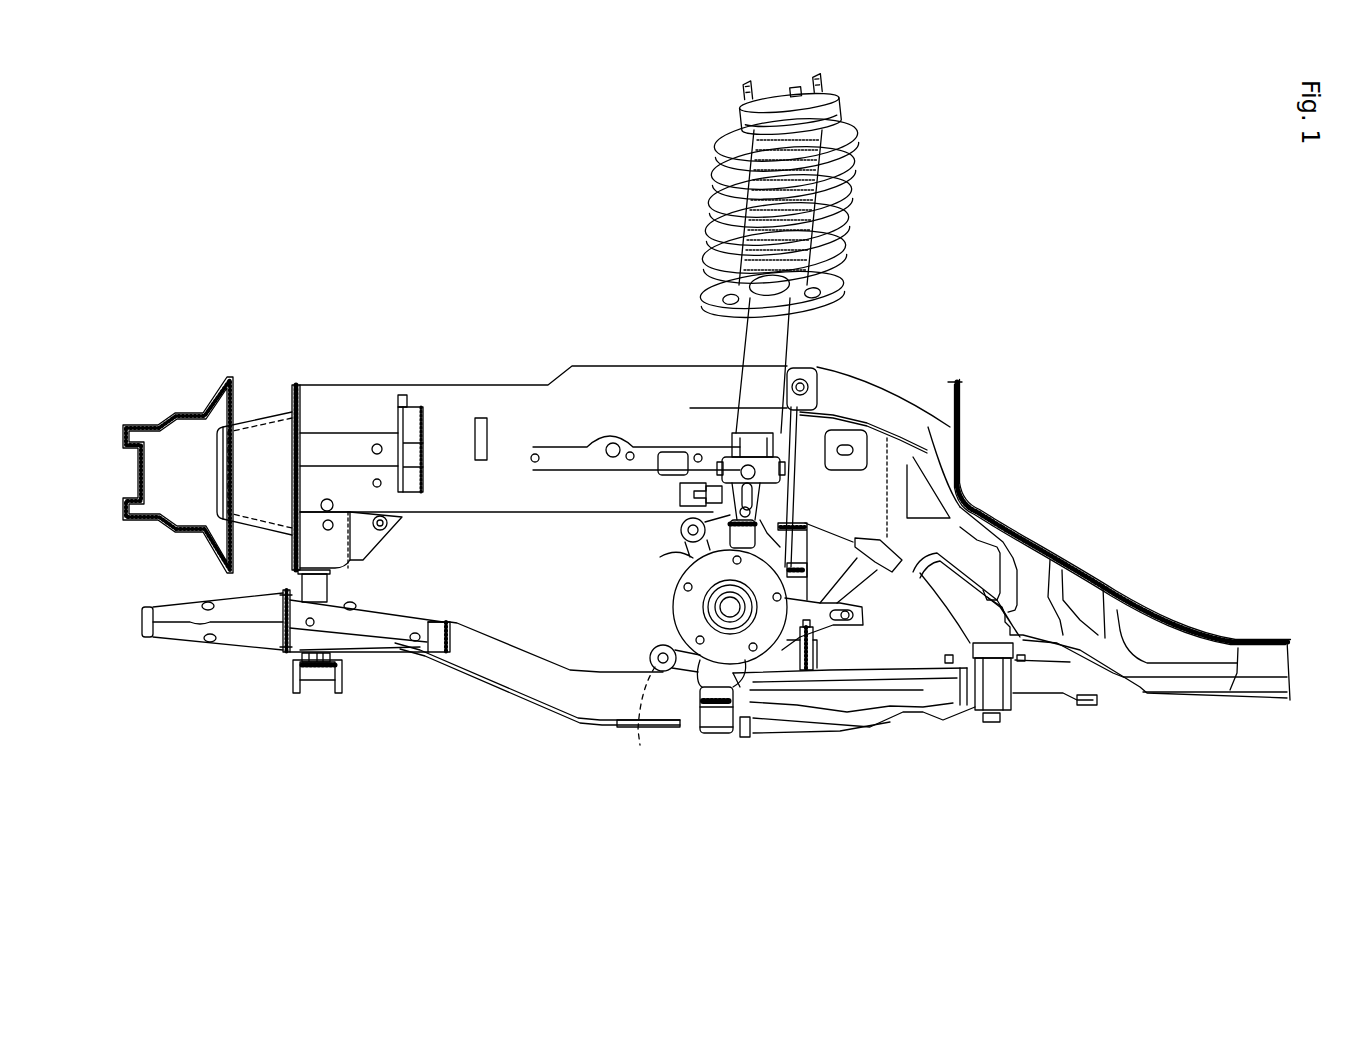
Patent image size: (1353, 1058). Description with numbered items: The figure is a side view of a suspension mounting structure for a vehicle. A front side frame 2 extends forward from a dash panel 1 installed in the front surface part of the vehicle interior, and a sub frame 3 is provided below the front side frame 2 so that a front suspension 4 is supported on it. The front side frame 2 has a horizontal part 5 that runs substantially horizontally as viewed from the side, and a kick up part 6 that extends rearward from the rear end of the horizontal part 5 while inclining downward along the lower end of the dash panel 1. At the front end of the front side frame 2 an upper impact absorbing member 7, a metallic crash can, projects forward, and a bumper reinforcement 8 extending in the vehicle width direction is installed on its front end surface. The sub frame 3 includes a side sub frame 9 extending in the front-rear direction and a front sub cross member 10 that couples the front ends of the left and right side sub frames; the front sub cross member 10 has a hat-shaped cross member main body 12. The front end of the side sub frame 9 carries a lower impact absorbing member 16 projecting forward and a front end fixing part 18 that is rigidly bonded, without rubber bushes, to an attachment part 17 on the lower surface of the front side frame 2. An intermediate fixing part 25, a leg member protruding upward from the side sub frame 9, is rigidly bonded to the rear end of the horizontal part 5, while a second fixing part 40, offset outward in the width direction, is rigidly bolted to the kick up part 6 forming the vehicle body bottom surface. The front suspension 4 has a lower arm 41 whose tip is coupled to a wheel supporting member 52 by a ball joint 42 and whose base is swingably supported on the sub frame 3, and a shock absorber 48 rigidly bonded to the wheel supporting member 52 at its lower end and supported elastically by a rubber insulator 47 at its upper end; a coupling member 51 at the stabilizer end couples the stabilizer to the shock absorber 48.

The dash panel 1 is at (960, 412).
The front side frame 2 is at (505, 382).
The sub frame 3 is at (537, 710).
The front suspension 4 is at (667, 623).
The horizontal part 5 is at (507, 503).
The kick up part 6 is at (908, 550).
The upper impact absorbing member 7 is at (253, 418).
The bumper reinforcement 8 is at (182, 414).
The side sub frame 9 is at (488, 667).
The front sub cross member 10 is at (292, 677).
The cross member main body 12 is at (643, 723).
The lower impact absorbing member 16 is at (188, 635).
The attachment part 17 is at (303, 550).
The front end fixing part 18 is at (330, 585).
The intermediate fixing part 25 is at (812, 658).
The second fixing part 40 is at (988, 690).
The lower arm 41 is at (797, 710).
The ball joint 42 is at (720, 733).
The rubber insulator 47 is at (753, 110).
The shock absorber 48 is at (742, 340).
The coupling member 51 is at (796, 502).
The wheel supporting member 52 is at (687, 570).